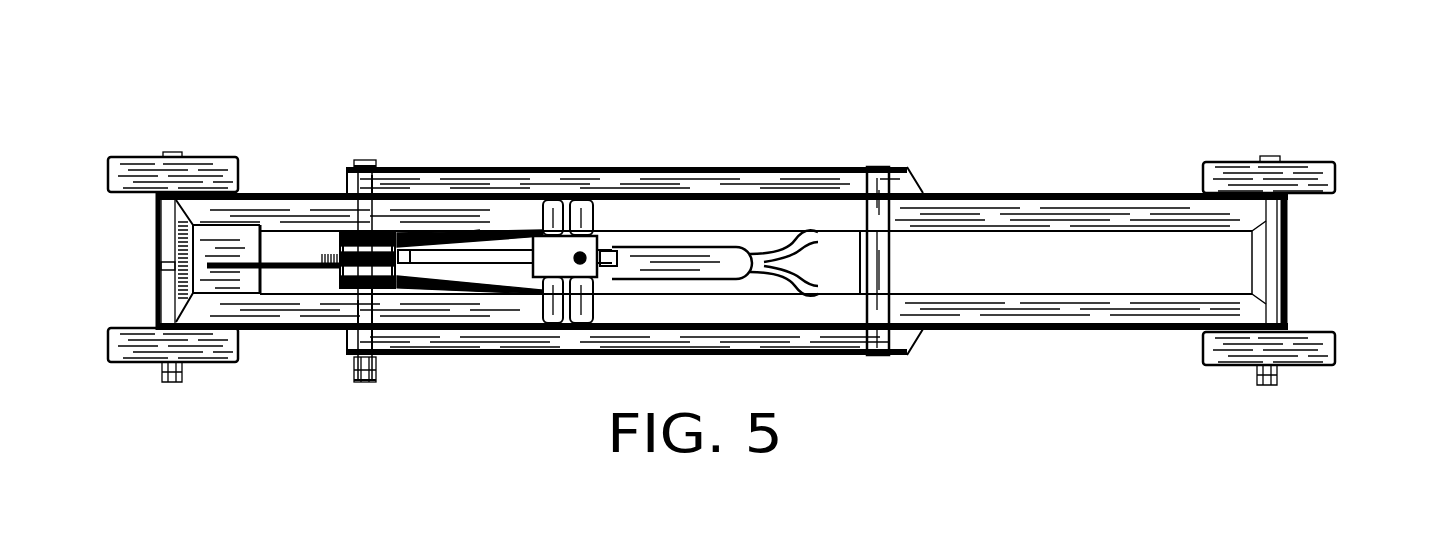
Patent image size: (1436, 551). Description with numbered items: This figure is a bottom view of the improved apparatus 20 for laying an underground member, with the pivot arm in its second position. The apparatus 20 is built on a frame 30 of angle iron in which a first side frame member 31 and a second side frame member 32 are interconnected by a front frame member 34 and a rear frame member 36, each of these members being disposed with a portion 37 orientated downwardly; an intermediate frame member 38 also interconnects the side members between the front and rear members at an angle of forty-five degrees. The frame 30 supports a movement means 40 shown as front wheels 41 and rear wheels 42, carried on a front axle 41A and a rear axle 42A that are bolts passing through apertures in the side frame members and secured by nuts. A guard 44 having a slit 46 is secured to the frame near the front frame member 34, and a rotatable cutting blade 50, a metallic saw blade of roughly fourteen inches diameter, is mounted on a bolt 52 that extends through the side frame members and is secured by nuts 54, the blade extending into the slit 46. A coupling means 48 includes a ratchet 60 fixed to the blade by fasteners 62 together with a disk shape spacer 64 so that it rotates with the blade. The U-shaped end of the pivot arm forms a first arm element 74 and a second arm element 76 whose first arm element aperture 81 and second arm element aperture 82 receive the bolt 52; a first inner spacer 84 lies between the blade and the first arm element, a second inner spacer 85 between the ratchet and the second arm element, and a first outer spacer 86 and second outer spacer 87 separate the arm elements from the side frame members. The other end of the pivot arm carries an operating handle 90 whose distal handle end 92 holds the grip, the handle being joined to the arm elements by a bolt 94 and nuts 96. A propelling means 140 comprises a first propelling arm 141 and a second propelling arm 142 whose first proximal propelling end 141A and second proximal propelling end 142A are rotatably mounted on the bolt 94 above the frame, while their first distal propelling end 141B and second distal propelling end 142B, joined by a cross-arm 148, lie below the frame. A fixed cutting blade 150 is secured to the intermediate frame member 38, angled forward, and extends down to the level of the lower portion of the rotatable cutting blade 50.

The apparatus 20 is at (1036, 88).
The frame 30 is at (1015, 215).
The first side frame member 31 is at (1083, 323).
The second side frame member 32 is at (1150, 210).
The front frame member 34 is at (167, 242).
The rear frame member 36 is at (1290, 230).
The portion 37 is at (1148, 330).
The intermediate frame member 38 is at (571, 325).
The movement means 40 is at (147, 122).
The front wheels 41 is at (150, 167).
The front axle 41A is at (170, 277).
The rear wheels 42 is at (1310, 172).
The rear axle 42A is at (1278, 270).
The guard 44 is at (220, 248).
The slit 46 is at (170, 307).
The coupling means 48 is at (291, 113).
The rotatable cutting blade 50 is at (272, 292).
The bolt 52 is at (400, 190).
The nuts 54 is at (380, 355).
The ratchet 60 is at (338, 250).
The fasteners 62 is at (335, 262).
The disk shape spacer 64 is at (440, 285).
The first arm element 74 is at (400, 283).
The second arm element 76 is at (492, 230).
The first arm element aperture 81 is at (395, 290).
The second arm element aperture 82 is at (430, 248).
The first inner spacer 84 is at (348, 285).
The second inner spacer 85 is at (345, 248).
The first outer spacer 86 is at (356, 322).
The second outer spacer 87 is at (346, 180).
The operating handle 90 is at (675, 245).
The distal handle end 92 is at (760, 252).
The bolt 94 is at (366, 186).
The nuts 96 is at (357, 375).
The propelling means 140 is at (588, 112).
The first propelling arm 141 is at (827, 332).
The first proximal propelling end 141A is at (373, 383).
The first distal propelling end 141B is at (910, 347).
The second propelling arm 142 is at (627, 168).
The second proximal propelling end 142A is at (390, 167).
The second distal propelling end 142B is at (907, 182).
The cross-arm 148 is at (889, 262).
The fixed cutting blade 150 is at (552, 232).